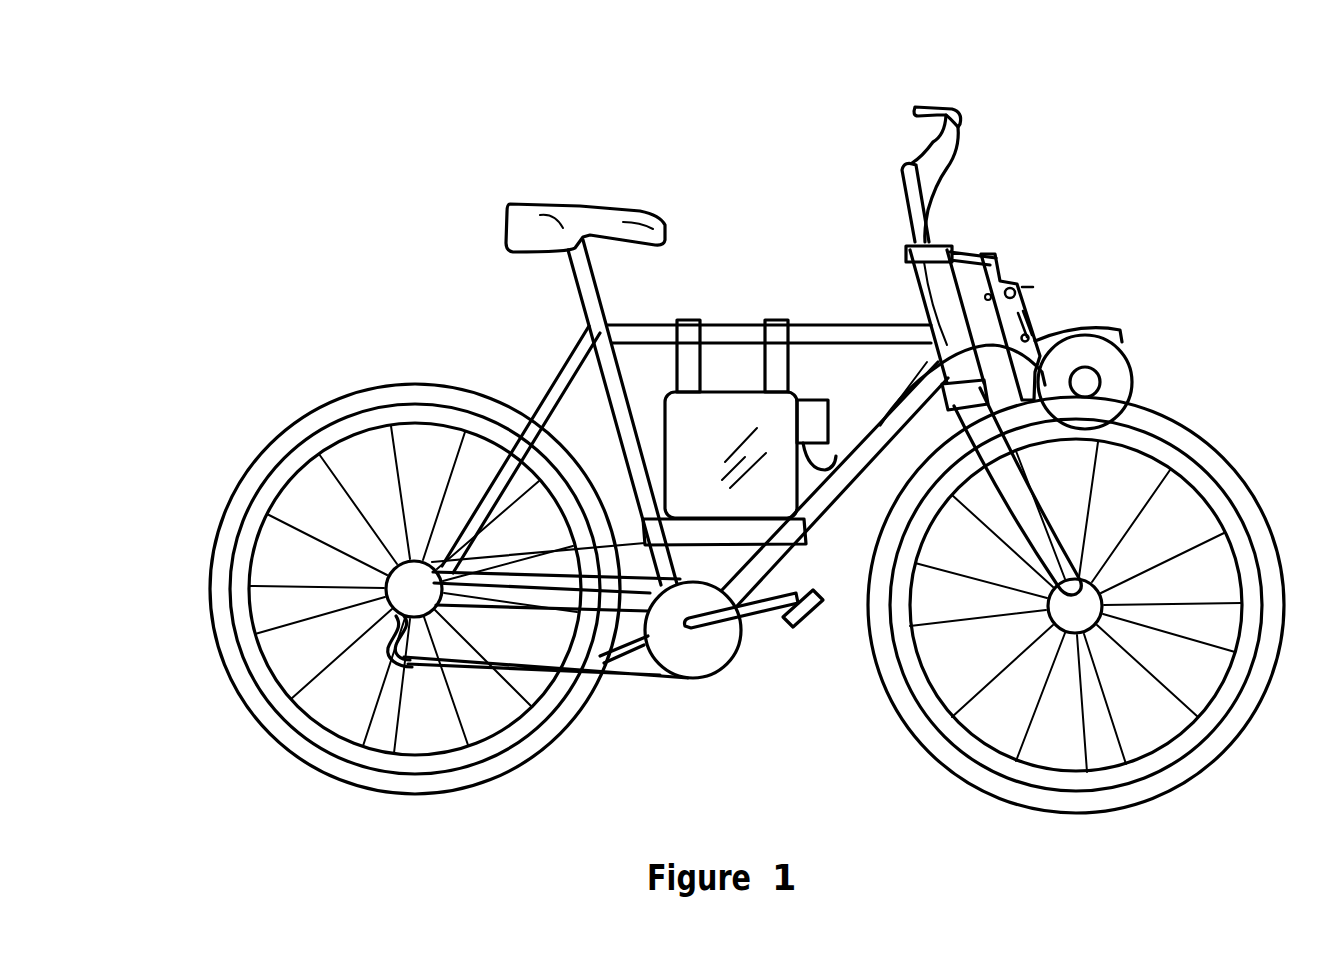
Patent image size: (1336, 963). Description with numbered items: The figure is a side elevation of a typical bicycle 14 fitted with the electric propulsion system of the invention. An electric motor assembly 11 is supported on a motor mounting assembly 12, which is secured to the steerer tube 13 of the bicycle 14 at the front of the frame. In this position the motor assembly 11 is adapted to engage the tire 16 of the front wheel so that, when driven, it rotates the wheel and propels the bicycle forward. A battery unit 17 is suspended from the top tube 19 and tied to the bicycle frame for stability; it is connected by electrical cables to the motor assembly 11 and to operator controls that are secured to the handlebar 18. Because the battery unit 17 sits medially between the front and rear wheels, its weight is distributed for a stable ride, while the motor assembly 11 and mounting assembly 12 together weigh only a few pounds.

The electric motor assembly 11 is at (1098, 317).
The motor mounting assembly 12 is at (1022, 268).
The steerer tube 13 is at (947, 315).
The bicycle 14 is at (642, 168).
The tire 16 is at (1163, 417).
The battery unit 17 is at (743, 392).
The handlebar 18 is at (933, 105).
The top tube 19 is at (793, 322).